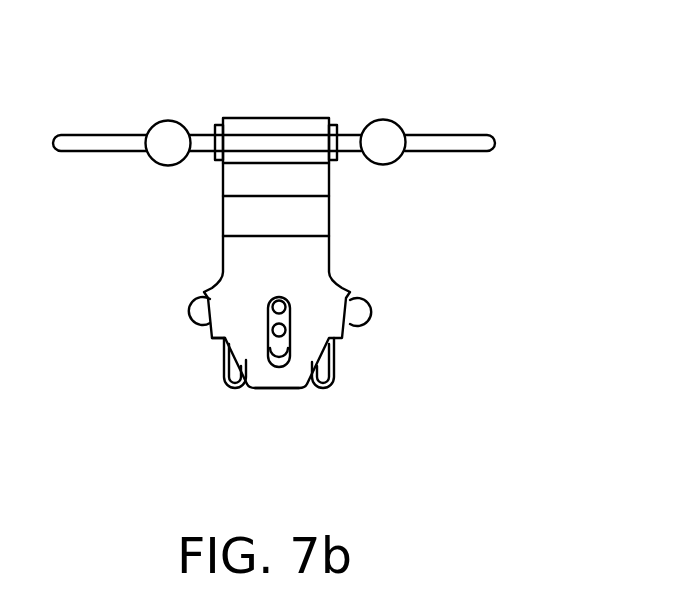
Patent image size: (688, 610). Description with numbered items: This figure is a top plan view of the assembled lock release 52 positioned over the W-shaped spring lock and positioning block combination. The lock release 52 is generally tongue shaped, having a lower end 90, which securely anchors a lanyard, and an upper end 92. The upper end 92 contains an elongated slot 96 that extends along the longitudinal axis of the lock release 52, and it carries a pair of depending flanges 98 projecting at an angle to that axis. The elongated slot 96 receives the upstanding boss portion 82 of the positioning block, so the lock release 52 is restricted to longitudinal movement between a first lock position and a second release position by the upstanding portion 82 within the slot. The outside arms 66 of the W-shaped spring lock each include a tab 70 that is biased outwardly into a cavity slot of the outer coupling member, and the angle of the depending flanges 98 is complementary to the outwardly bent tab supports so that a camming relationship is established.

The lower end 90 is at (271, 117).
The lock release 52 is at (256, 272).
The upstanding boss portion 82 is at (281, 318).
The tab 70 is at (372, 318).
The outside arms 66 is at (336, 370).
The elongated slot 96 is at (282, 362).
The depending flanges 98 is at (205, 338).
The upper end 92 is at (292, 388).